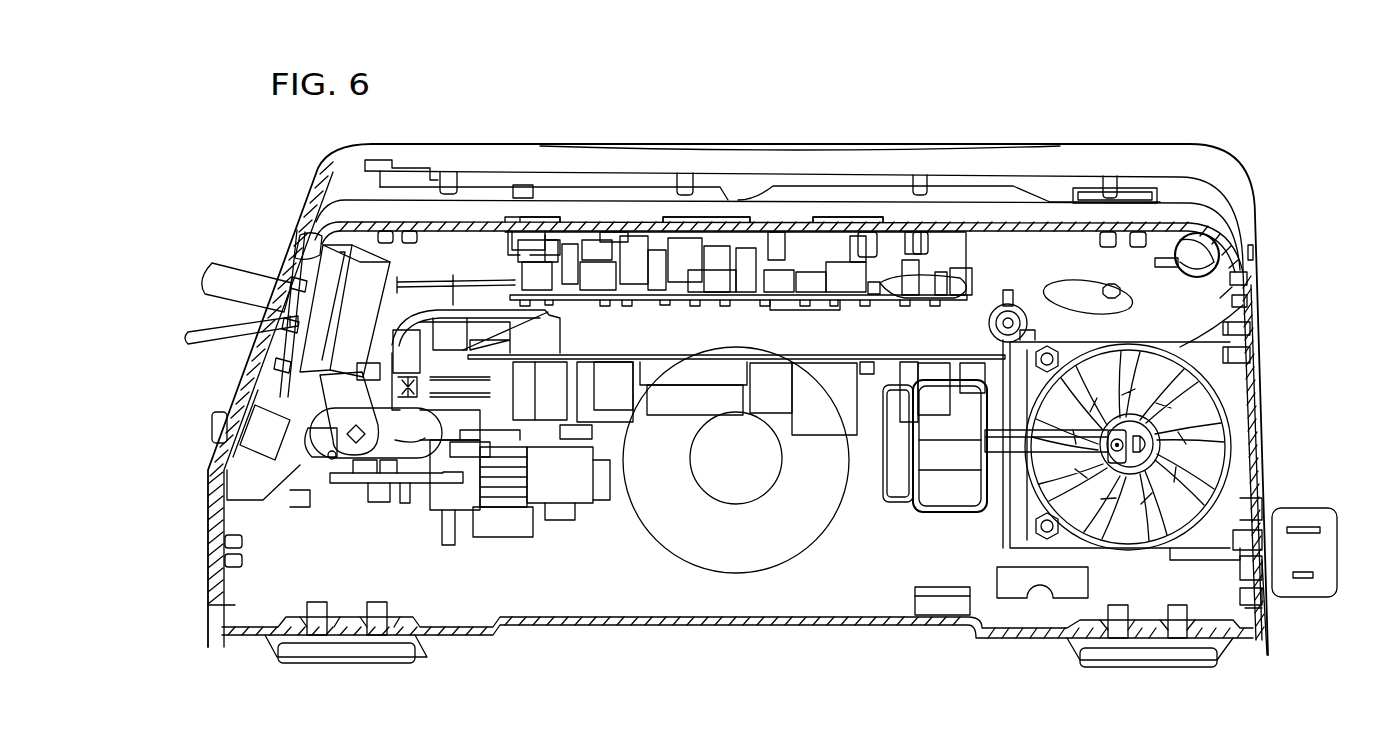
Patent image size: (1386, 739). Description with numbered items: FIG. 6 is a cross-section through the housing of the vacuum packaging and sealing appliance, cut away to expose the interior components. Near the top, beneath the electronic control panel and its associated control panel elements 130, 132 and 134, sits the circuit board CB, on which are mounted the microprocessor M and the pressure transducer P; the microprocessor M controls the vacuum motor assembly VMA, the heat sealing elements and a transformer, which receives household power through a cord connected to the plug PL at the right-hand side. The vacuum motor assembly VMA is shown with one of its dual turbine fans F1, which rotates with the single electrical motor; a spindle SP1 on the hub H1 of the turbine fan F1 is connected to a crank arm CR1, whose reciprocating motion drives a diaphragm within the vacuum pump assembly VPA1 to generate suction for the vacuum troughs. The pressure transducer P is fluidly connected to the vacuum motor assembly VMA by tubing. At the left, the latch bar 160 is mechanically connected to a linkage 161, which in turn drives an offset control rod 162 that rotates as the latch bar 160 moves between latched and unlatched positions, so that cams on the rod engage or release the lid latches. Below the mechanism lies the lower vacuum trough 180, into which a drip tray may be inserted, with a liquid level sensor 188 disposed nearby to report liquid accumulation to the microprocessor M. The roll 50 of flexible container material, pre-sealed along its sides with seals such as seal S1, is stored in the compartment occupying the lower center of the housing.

The control panel element 130 is at (568, 222).
The control panel element 132 is at (710, 222).
The control panel element 134 is at (840, 222).
The latch bar 160 is at (225, 283).
The linkage 161 is at (345, 412).
The offset control rod 162 is at (418, 442).
The lower vacuum trough 180 is at (472, 513).
The liquid level sensor 188 is at (527, 487).
The roll 50 is at (752, 568).
The seal S1 is at (350, 480).
The circuit board CB is at (735, 305).
The microprocessor M is at (815, 305).
The pressure transducer P is at (610, 375).
The vacuum motor assembly VMA is at (1245, 302).
The hub H1 is at (1163, 436).
The turbine fan F1 is at (1220, 438).
The crank arm CR1 is at (992, 447).
The vacuum pump assembly VPA1 is at (945, 475).
The spindle SP1 is at (1127, 450).
The plug PL is at (1298, 597).